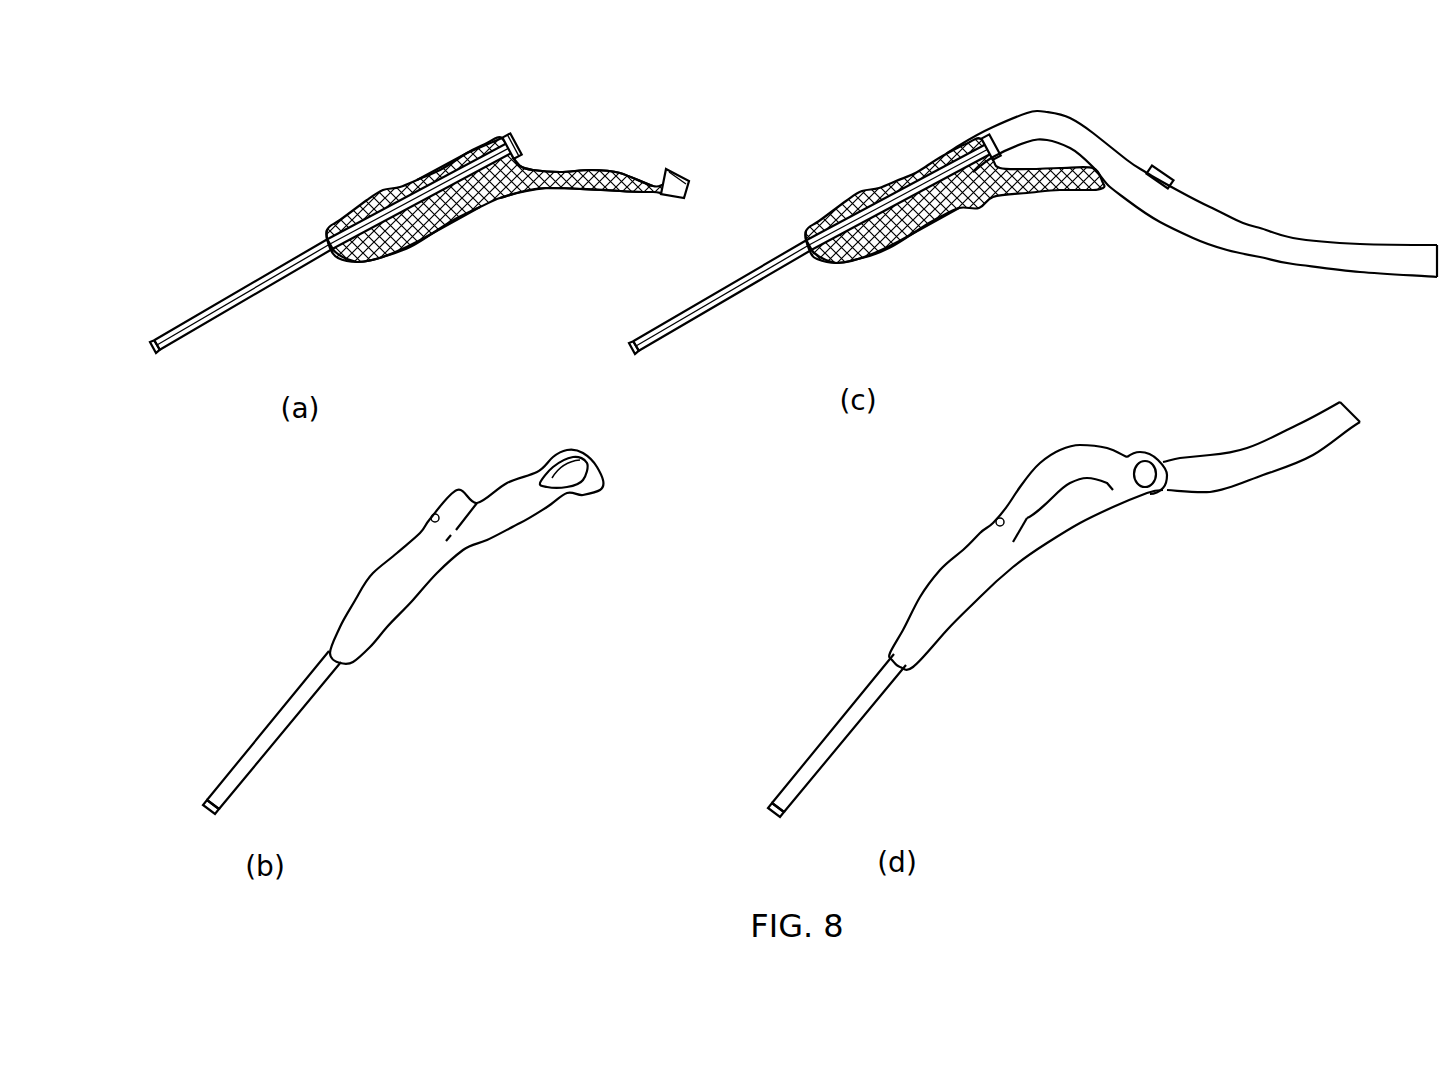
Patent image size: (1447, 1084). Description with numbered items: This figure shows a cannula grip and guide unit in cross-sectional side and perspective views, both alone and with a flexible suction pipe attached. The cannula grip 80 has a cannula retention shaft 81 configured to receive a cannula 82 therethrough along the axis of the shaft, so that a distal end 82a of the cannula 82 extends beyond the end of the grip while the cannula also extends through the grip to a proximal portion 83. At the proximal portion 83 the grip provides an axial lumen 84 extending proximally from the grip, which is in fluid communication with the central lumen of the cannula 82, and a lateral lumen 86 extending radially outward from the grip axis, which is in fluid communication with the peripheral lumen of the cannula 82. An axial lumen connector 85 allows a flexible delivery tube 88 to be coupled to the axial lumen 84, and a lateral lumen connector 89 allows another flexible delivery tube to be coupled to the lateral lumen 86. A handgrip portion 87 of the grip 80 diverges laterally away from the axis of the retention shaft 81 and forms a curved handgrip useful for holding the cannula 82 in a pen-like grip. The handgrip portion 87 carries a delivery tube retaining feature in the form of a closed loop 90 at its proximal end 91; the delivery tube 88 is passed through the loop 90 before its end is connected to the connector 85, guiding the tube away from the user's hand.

The cannula grip 80 is at (408, 182).
The cannula retention shaft 81 is at (338, 228).
The cannula 82 is at (262, 277).
The distal end 82a is at (172, 330).
The proximal portion 83 is at (495, 140).
The axial lumen 84 is at (521, 140).
The axial lumen connector 85 is at (523, 161).
The lateral lumen 86 is at (470, 146).
The handgrip portion 87 is at (529, 190).
The flexible delivery tube 88 is at (1060, 113).
The lateral lumen connector 89 is at (458, 158).
The loop 90 is at (690, 176).
The proximal end 91 is at (692, 196).